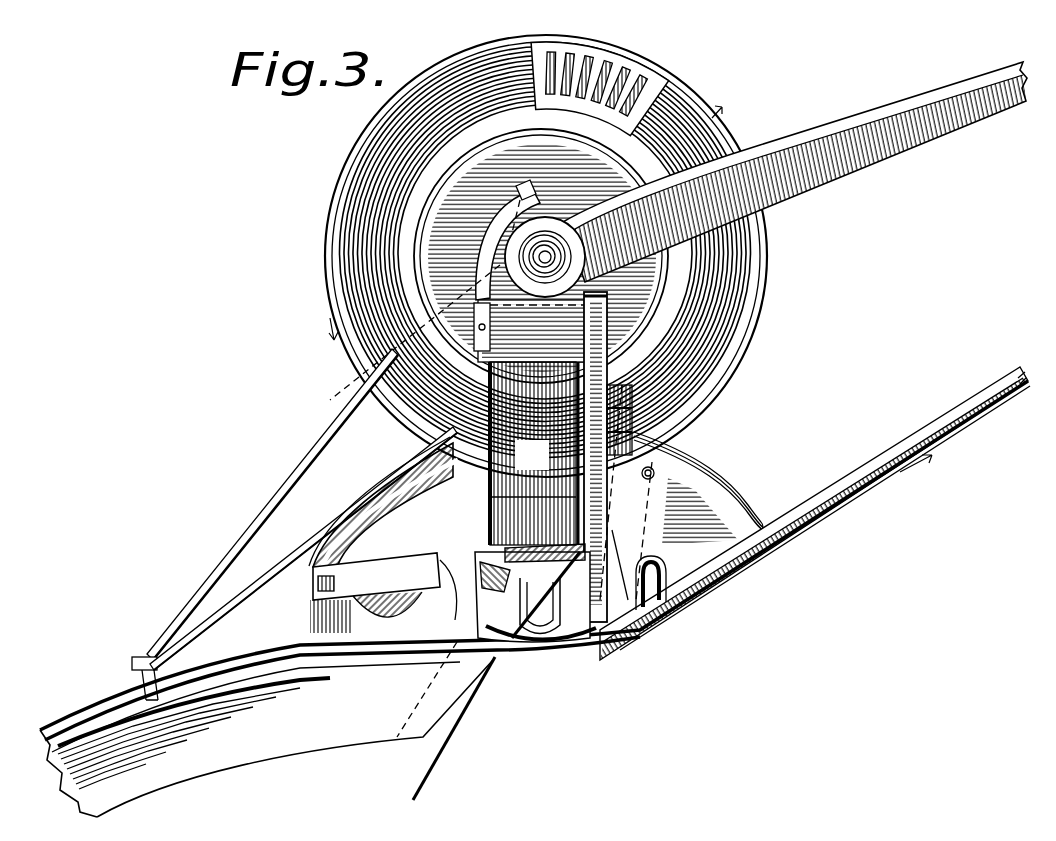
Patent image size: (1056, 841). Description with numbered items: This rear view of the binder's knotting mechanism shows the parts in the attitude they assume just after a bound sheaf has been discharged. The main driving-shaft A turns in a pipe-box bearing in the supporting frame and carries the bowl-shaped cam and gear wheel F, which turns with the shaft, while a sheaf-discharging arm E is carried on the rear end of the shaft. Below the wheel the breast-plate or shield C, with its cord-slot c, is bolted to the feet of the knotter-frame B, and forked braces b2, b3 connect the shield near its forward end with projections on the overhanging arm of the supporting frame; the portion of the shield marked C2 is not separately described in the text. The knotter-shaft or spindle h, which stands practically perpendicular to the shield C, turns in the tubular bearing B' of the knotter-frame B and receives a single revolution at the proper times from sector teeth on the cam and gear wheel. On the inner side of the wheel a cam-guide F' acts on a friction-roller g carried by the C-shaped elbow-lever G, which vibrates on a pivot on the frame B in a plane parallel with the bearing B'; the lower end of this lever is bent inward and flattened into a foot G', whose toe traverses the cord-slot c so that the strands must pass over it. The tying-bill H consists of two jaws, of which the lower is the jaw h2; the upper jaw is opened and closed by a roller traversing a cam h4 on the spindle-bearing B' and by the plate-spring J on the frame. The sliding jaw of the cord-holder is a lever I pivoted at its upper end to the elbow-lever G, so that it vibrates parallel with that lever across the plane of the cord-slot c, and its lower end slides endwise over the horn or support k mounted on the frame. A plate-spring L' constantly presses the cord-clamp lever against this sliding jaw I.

The main driving-shaft A is at (545, 257).
The knotter-frame B is at (697, 511).
The tubular bearing B' is at (534, 453).
The breast-plate or shield C is at (535, 592).
The flange of base C2 is at (422, 689).
The sheaf-discharging arm E is at (876, 112).
The cam and gear wheel F is at (546, 256).
The cam-guide F' is at (435, 288).
The elbow-lever G is at (619, 457).
The foot G' is at (544, 664).
The tying-bill H is at (532, 597).
The sliding jaw lever I is at (626, 492).
The plate-spring J is at (394, 535).
The plate-spring L' is at (701, 483).
The forked brace b2 is at (322, 507).
The forked brace b3 is at (293, 455).
The cord-slot c is at (600, 89).
The friction-roller g is at (476, 322).
The knotter-shaft h is at (589, 595).
The lower jaw h2 is at (574, 642).
The cam h4 is at (545, 554).
The horn or support k is at (495, 577).